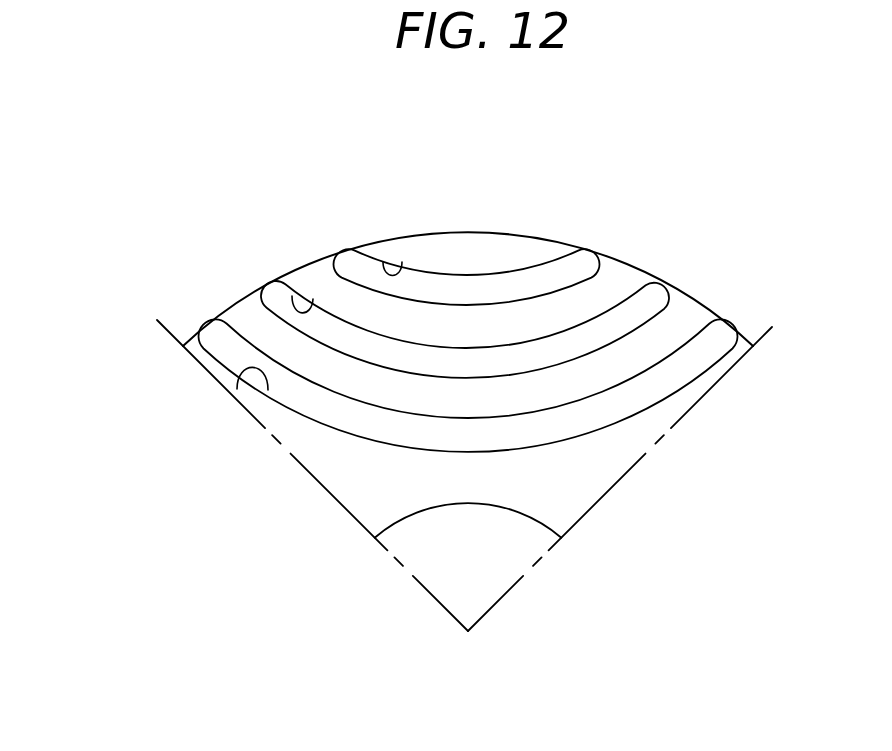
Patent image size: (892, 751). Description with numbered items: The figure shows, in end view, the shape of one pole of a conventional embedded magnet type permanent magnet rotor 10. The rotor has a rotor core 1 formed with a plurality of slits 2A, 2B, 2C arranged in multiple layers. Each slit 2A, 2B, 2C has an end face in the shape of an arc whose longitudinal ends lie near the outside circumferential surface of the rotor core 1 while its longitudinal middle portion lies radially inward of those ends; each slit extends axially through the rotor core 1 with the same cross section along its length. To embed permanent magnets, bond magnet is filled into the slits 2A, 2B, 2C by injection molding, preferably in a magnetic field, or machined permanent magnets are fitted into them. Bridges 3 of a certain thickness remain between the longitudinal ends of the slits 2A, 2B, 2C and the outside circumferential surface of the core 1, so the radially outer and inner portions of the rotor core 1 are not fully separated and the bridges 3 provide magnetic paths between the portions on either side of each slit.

The permanent magnet rotor 10 is at (648, 205).
The rotor core 1 is at (500, 247).
The bridges 3 is at (208, 323).
The slit 2A is at (383, 253).
The slit 2B is at (296, 291).
The slit 2C is at (237, 388).